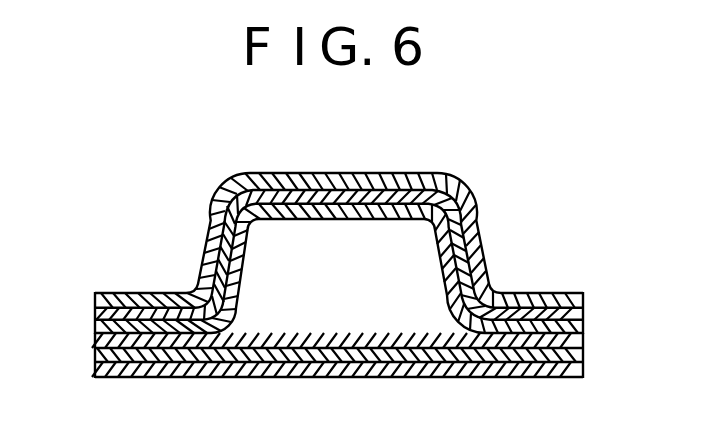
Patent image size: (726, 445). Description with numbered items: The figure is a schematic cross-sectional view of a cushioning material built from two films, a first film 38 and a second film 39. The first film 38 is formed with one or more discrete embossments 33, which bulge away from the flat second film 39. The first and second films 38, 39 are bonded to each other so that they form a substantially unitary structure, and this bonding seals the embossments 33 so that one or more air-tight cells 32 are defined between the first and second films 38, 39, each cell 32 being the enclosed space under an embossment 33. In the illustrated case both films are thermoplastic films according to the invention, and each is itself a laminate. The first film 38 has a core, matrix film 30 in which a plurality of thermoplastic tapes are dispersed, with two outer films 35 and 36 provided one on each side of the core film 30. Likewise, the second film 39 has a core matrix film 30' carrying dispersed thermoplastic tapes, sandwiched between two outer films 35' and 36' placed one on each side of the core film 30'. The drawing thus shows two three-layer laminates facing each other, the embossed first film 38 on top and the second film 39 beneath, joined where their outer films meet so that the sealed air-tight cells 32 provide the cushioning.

The discrete embossments 33 is at (394, 173).
The outer film 35 is at (338, 240).
The core matrix film 30 is at (339, 249).
The outer film 36 is at (371, 255).
The air-tight cells 32 is at (345, 290).
The outer film 35' is at (369, 276).
The core matrix film 30' is at (339, 383).
The outer film 36' is at (367, 364).
The first film 38 is at (82, 292).
The second film 39 is at (82, 336).